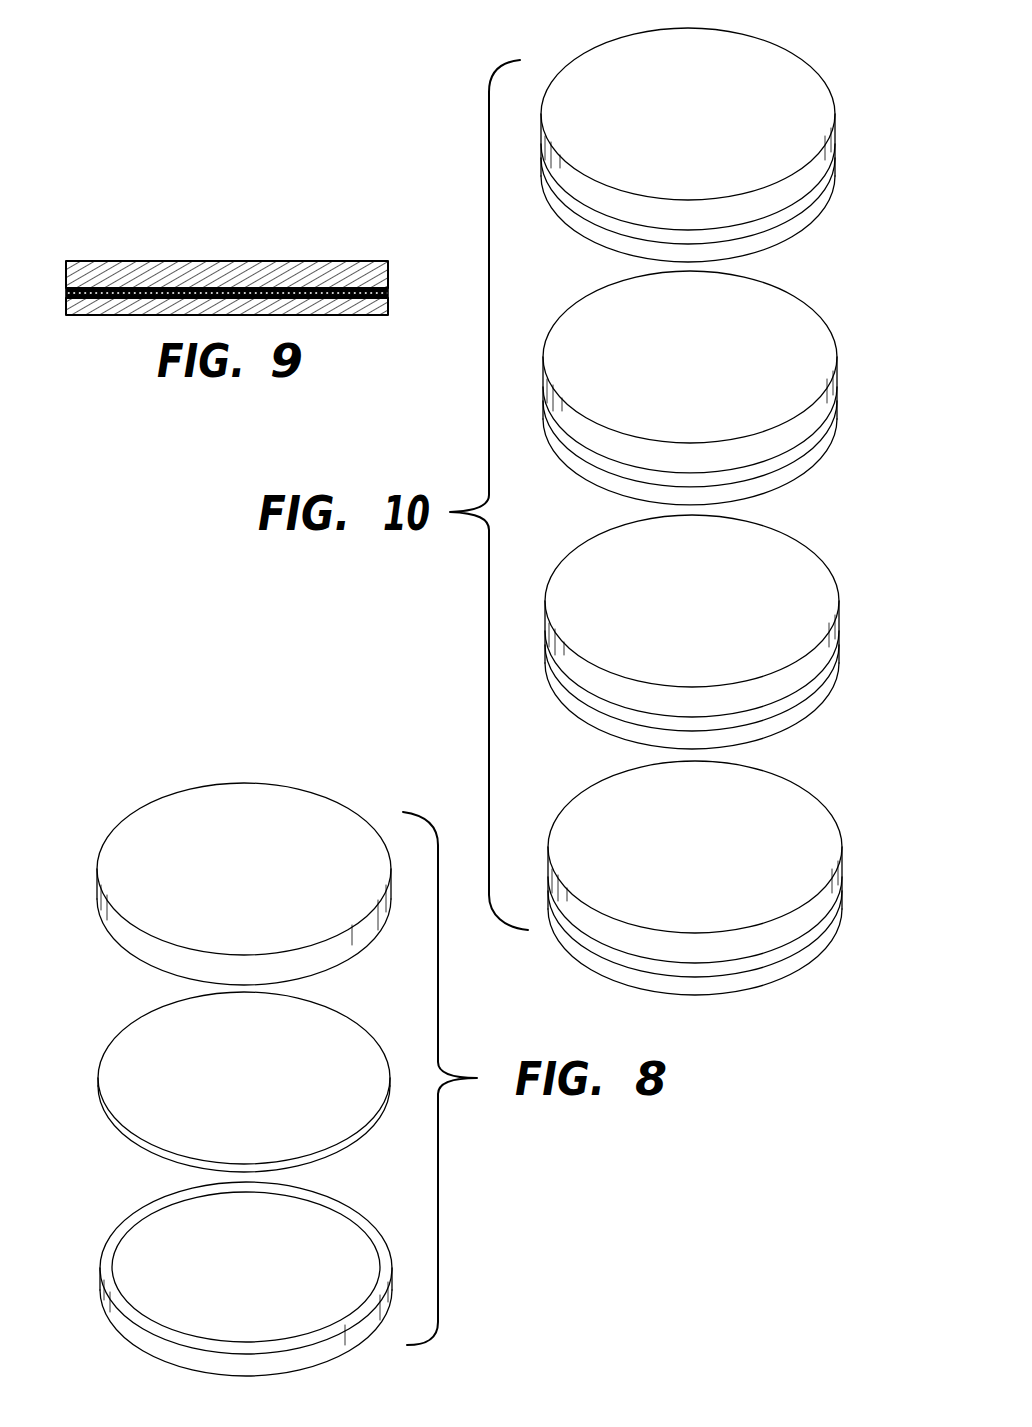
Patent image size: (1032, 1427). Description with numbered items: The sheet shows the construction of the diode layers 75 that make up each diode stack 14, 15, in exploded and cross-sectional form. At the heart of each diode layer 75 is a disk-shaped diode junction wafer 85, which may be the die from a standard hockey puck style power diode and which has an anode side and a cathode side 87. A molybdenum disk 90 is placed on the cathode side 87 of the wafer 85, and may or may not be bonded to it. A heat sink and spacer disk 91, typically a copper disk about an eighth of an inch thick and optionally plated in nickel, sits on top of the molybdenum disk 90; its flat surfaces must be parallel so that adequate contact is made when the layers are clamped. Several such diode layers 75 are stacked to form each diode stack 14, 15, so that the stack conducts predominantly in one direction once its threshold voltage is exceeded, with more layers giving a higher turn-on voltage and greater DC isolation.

In FIG. 10, the diode stack 14 is at (729, 506).
In FIG. 10, the diode stack 15 is at (707, 511).
In FIG. 9, the diode layer 75 is at (243, 285).
In FIG. 10, the diode layer 75 is at (833, 205).
In FIG. 8, the diode layer 75 is at (216, 1029).
In FIG. 9, the heat sink/spacer disk 91 is at (228, 261).
In FIG. 8, the heat sink/spacer disk 91 is at (98, 862).
In FIG. 9, the molybdenum disk 90 is at (362, 290).
In FIG. 8, the molybdenum disk 90 is at (105, 1052).
In FIG. 9, the diode junction wafer 85 is at (323, 315).
In FIG. 8, the diode junction wafer 85 is at (216, 1265).
In FIG. 8, the cathode side 87 is at (173, 1227).